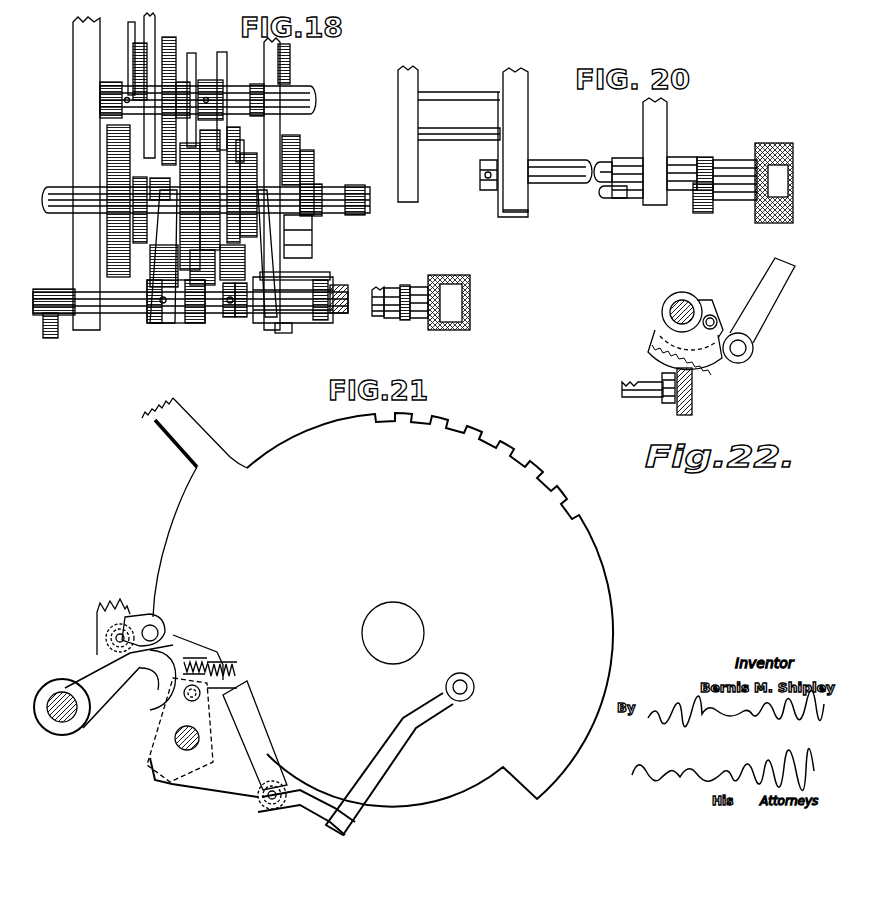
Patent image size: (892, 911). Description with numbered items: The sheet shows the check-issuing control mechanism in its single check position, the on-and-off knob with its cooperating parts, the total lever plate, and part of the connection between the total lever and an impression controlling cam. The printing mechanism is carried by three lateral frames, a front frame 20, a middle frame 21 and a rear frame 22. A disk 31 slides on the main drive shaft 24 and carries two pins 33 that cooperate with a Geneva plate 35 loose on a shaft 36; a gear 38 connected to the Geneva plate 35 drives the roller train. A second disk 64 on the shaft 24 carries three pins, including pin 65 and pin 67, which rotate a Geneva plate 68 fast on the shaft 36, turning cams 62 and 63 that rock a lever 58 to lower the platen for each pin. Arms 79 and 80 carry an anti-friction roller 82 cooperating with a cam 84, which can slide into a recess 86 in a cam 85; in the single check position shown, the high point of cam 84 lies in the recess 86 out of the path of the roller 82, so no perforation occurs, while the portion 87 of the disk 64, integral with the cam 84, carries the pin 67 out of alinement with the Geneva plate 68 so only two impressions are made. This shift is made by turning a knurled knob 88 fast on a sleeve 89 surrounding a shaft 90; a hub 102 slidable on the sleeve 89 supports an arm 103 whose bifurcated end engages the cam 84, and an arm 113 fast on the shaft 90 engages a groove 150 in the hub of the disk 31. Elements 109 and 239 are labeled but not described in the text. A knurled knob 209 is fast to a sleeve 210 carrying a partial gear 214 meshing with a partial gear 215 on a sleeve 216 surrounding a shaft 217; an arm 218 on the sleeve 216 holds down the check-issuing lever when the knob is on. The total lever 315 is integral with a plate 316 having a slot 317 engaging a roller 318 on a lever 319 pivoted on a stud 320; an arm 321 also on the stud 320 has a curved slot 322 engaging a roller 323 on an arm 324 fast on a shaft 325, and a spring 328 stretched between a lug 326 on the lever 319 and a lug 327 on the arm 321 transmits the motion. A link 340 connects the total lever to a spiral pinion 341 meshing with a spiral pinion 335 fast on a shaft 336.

In FIG. 18, the middle frame 21 is at (73, 67).
In FIG. 20, the middle frame 21 is at (523, 108).
In FIG. 20, the rear frame 22 is at (410, 92).
In FIG. 20, the front frame 20 is at (658, 125).
In FIG. 18, the main drive shaft 24 is at (343, 208).
In FIG. 18, the disk 31 is at (196, 265).
In FIG. 18, the pins 33 is at (190, 258).
In FIG. 18, the Geneva plate 35 is at (190, 55).
In FIG. 18, the shaft 36 is at (235, 96).
In FIG. 18, the gear 38 is at (168, 48).
In FIG. 18, the lever 58 is at (147, 40).
In FIG. 18, the cam 62 is at (156, 42).
In FIG. 18, the cam 63 is at (137, 72).
In FIG. 18, the disk 64 is at (240, 318).
In FIG. 18, the pin 65 is at (225, 320).
In FIG. 18, the pin 67 is at (238, 148).
In FIG. 18, the Geneva plate 68 is at (222, 52).
In FIG. 18, the arm 79 is at (278, 82).
In FIG. 18, the arm 80 is at (288, 56).
In FIG. 18, the anti-friction roller 82 is at (292, 180).
In FIG. 18, the cam 84 is at (279, 240).
In FIG. 18, the cam 85 is at (300, 256).
In FIG. 18, the recess 86 is at (298, 162).
In FIG. 18, the portion 87 is at (236, 240).
In FIG. 20, the knurled knob 88 is at (445, 282).
In FIG. 20, the sleeve 89 is at (392, 316).
In FIG. 20, the shaft 90 is at (605, 196).
In FIG. 18, the hub 102 is at (290, 318).
In FIG. 18, the arm 103 is at (292, 280).
In FIG. 18, the gear 109 is at (130, 252).
In FIG. 18, the arm 113 is at (165, 325).
In FIG. 18, the groove 150 is at (163, 182).
In FIG. 20, the knurled knob 209 is at (775, 152).
In FIG. 20, the sleeve 210 is at (728, 170).
In FIG. 20, the partial gear 214 is at (700, 208).
In FIG. 20, the partial gear 215 is at (690, 158).
In FIG. 20, the sleeve 216 is at (622, 160).
In FIG. 20, the shaft 217 is at (582, 170).
In FIG. 20, the arm 218 is at (482, 170).
In FIG. 22, the hub 239 is at (670, 315).
In FIG. 21, the total lever 315 is at (188, 437).
In FIG. 21, the plate 316 is at (462, 447).
In FIG. 21, the slot 317 is at (258, 750).
In FIG. 21, the roller 318 is at (278, 787).
In FIG. 21, the lever 319 is at (220, 767).
In FIG. 21, the stud 320 is at (173, 742).
In FIG. 21, the arm 321 is at (173, 645).
In FIG. 21, the curved slot 322 is at (153, 678).
In FIG. 21, the roller 323 is at (122, 638).
In FIG. 21, the arm 324 is at (100, 672).
In FIG. 21, the shaft 325 is at (68, 718).
In FIG. 21, the lug 326 is at (232, 673).
In FIG. 21, the lug 327 is at (190, 658).
In FIG. 21, the spring 328 is at (223, 672).
In FIG. 22, the spiral pinion 335 is at (694, 414).
In FIG. 22, the shaft 336 is at (640, 398).
In FIG. 22, the link 340 is at (765, 303).
In FIG. 21, the link 340 is at (400, 760).
In FIG. 22, the spiral pinion 341 is at (710, 358).